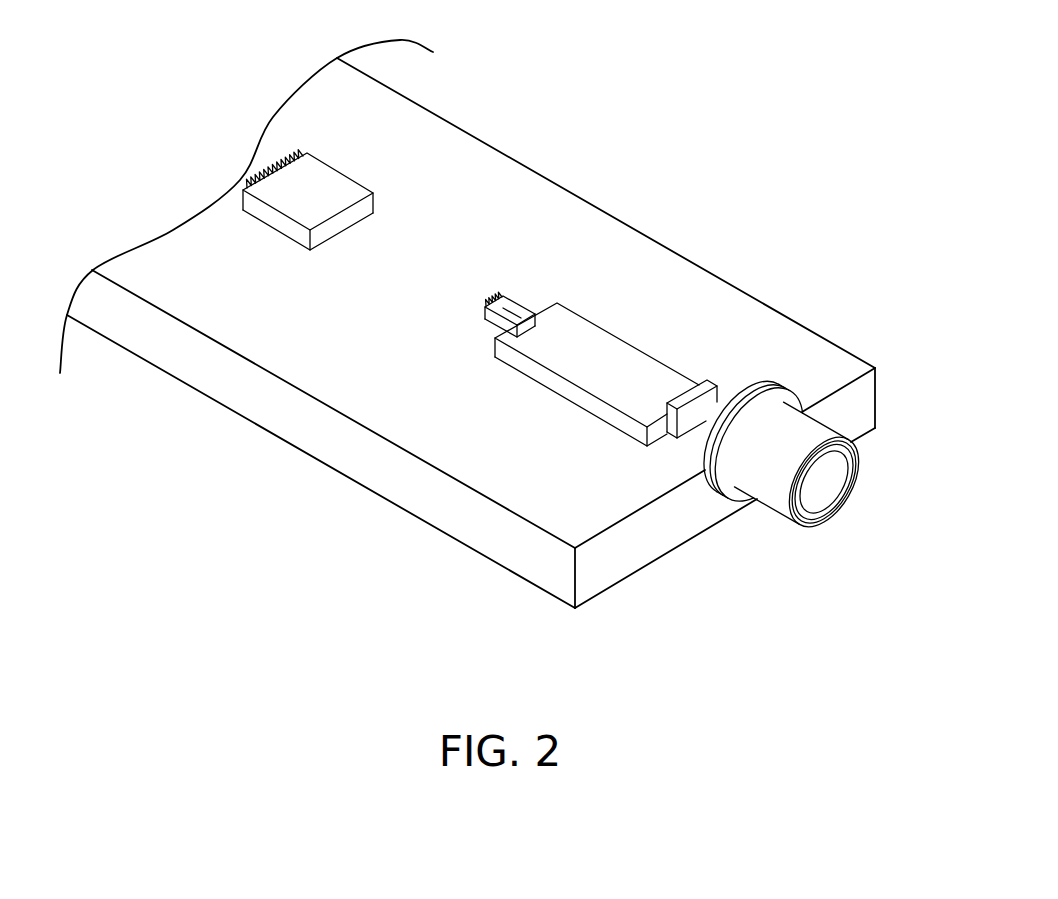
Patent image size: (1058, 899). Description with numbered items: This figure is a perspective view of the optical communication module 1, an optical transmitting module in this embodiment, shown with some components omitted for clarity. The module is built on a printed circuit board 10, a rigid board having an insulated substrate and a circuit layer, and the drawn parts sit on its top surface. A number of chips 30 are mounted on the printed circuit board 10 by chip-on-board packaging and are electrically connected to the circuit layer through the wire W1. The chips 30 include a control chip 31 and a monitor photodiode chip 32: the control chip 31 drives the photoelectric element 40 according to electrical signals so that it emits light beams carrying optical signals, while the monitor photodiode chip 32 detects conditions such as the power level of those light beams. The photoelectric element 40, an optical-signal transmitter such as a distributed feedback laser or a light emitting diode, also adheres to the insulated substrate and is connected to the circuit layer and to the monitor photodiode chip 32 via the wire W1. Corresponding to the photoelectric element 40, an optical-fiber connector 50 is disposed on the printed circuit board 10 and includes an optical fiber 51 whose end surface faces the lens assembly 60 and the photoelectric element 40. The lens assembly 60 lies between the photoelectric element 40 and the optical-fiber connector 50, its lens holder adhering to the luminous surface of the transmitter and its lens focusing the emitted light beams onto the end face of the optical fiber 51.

The optical communication module 1 is at (870, 104).
The printed circuit board 10 is at (332, 440).
The chips 30 is at (487, 63).
The control chip 31 is at (330, 188).
The monitor photodiode chip 32 is at (520, 297).
The photoelectric element 40 is at (578, 338).
The optical-fiber connector 50 is at (797, 421).
The optical fiber 51 is at (713, 407).
The lens assembly 60 is at (695, 388).
The wire W1 is at (293, 157).